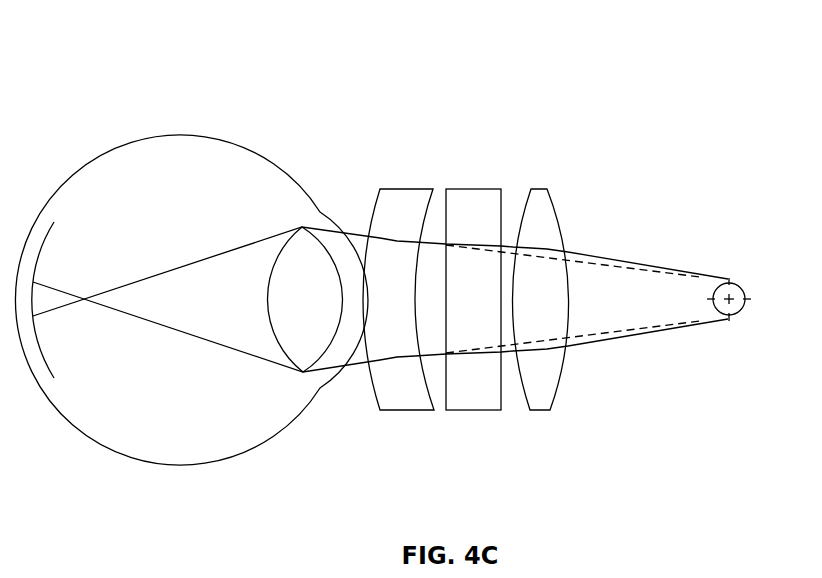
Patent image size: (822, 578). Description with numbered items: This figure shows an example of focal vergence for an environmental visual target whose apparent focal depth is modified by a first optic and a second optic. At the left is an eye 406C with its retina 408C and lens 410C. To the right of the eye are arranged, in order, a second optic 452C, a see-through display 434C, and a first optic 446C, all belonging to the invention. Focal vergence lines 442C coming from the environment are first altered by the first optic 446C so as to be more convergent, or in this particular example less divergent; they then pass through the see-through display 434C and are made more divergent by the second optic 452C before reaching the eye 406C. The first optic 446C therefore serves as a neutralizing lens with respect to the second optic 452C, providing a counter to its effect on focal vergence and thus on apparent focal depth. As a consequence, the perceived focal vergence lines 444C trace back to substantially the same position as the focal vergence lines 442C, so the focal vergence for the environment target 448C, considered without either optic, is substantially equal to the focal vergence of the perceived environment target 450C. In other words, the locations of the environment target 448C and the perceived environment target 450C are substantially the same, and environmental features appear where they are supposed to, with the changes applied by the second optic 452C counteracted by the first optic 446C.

The eye 406C is at (106, 152).
The retina 408C is at (41, 250).
The lens 410C is at (302, 226).
The focal vergence lines 442C is at (367, 363).
The second optic 452C is at (405, 189).
The display 434C is at (470, 189).
The first optic 446C is at (535, 189).
The perceived focal vergence lines 444C is at (576, 339).
The environment target 448C is at (728, 319).
The perceived environment target 450C is at (706, 381).